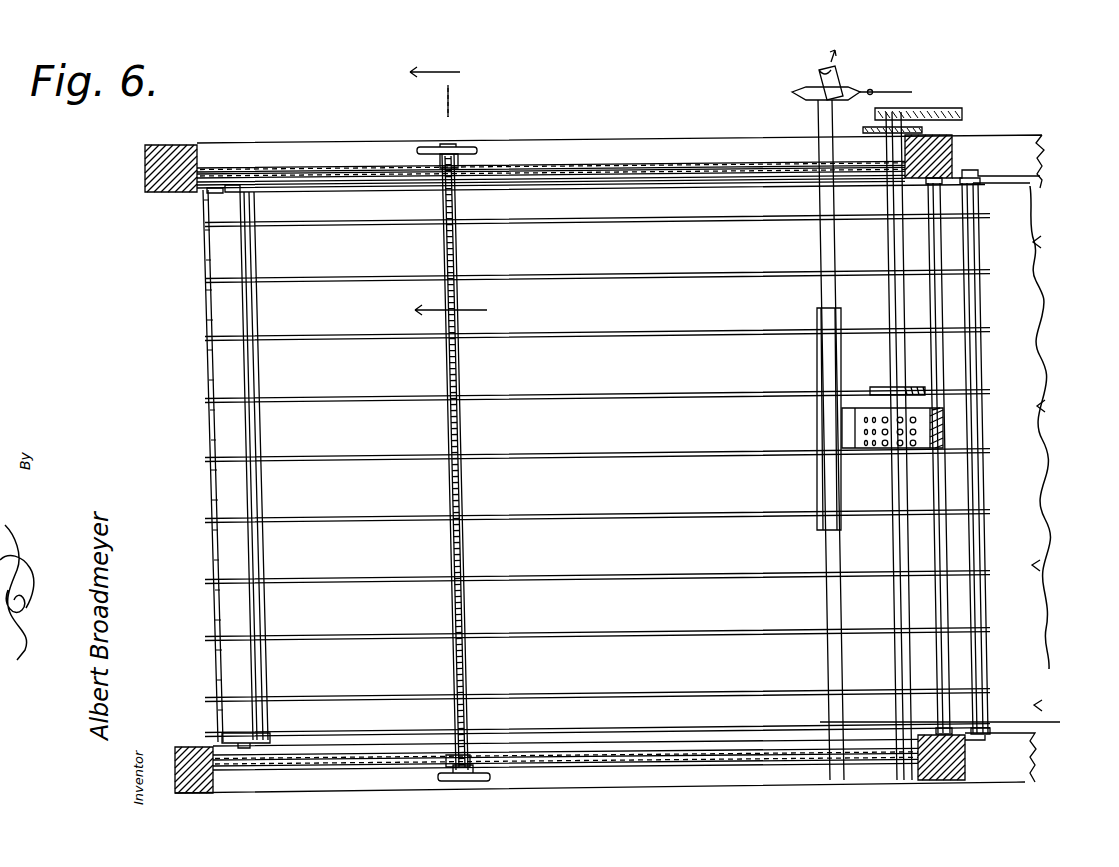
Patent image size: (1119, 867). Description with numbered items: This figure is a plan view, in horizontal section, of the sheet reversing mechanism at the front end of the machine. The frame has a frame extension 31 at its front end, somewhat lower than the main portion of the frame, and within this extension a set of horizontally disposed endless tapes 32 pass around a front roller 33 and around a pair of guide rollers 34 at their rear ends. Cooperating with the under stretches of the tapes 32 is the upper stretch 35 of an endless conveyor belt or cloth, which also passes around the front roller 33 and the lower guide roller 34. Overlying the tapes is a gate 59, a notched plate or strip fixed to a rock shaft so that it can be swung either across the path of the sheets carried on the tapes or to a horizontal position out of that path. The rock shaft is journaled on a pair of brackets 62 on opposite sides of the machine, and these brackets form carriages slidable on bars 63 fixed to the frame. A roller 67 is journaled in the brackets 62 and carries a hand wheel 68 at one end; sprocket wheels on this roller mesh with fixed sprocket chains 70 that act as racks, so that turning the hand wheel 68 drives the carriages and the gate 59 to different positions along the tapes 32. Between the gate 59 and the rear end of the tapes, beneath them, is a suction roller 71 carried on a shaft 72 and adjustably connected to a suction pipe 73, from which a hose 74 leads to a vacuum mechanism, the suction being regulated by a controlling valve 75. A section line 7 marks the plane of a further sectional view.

The section line 7— 7 is at (458, 185).
The frame extension 31 is at (244, 147).
The endless tapes 32 is at (568, 334).
The front roller 33 is at (212, 370).
The guide rollers 34 is at (945, 555).
The upper stretch of endless conveyor belt 35 is at (1060, 482).
The gate 59 is at (466, 551).
The brackets 62 is at (458, 167).
The bars 63 is at (642, 180).
The roller 67 is at (468, 485).
The hand wheel 68 is at (463, 146).
The sprocket chains 70 is at (663, 170).
The suction roller 71 is at (944, 416).
The shaft 72 is at (893, 358).
The suction pipe 73 is at (836, 312).
The hose 74 is at (840, 90).
The controlling valve 75 is at (814, 82).